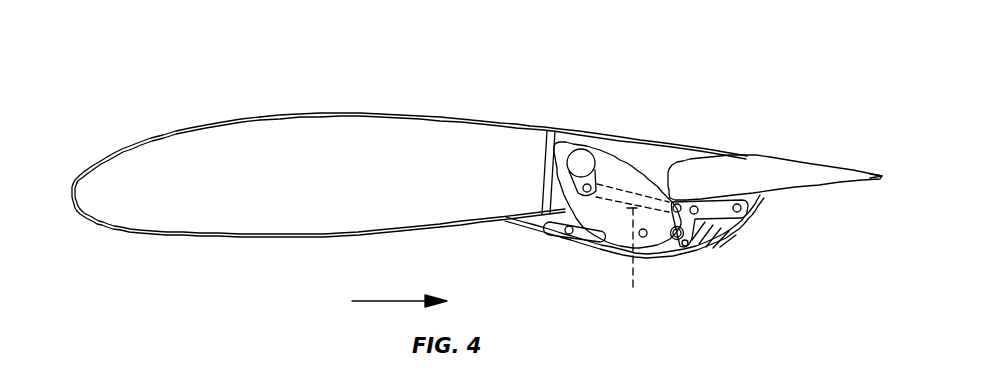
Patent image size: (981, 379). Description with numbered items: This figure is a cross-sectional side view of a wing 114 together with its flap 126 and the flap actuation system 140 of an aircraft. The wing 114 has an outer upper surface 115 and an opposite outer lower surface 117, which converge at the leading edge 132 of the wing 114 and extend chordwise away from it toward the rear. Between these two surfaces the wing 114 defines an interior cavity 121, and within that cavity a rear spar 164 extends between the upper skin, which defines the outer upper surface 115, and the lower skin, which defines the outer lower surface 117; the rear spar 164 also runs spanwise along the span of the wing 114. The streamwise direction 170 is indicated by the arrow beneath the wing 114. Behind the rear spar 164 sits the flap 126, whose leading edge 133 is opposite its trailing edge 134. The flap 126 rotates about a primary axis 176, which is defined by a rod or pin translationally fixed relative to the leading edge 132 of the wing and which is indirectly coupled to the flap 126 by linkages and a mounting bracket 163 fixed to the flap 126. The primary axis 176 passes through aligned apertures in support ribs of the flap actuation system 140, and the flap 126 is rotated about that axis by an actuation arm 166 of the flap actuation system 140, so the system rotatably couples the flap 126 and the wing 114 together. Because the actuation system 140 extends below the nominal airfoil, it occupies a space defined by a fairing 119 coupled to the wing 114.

The wing 114 is at (190, 127).
The outer upper surface 115 is at (365, 113).
The outer lower surface 117 is at (363, 235).
The fairing 119 is at (601, 252).
The interior cavity 121 is at (367, 184).
The flap 126 is at (788, 172).
The leading edge 132 is at (72, 207).
The leading edge 133 is at (675, 203).
The trailing edge 134 is at (883, 176).
The flap actuation system 140 is at (636, 138).
The mounting bracket 163 is at (722, 210).
The rear spar 164 is at (540, 158).
The actuation arm 166 is at (632, 287).
The streamwise direction 170 is at (370, 302).
The primary axis 176 is at (675, 238).